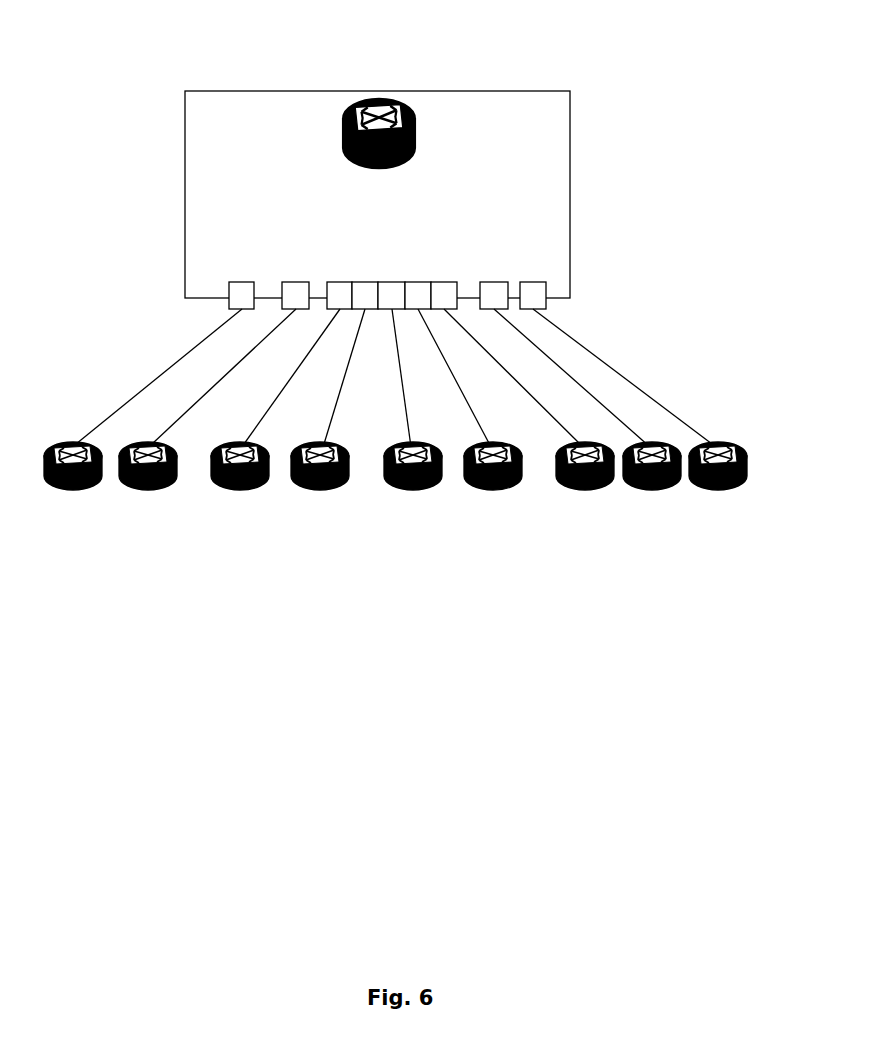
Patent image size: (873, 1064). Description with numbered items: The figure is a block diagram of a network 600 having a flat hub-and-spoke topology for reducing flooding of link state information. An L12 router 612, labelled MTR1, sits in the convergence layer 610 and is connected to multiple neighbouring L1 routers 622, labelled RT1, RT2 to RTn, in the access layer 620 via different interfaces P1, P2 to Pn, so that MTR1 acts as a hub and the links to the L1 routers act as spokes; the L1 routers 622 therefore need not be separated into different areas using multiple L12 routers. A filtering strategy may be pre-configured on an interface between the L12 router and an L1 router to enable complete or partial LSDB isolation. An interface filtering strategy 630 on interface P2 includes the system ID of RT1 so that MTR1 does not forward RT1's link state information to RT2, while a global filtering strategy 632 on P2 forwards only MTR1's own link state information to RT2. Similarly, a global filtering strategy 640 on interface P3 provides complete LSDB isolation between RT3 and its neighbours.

The network 600 is at (125, 67).
The convergence layer 610 is at (745, 308).
The L12 router 612 is at (527, 112).
The access layer 620 is at (745, 314).
The L1 routers 622 is at (57, 448).
The interface filtering strategy 630 is at (264, 249).
The global filtering strategy 632 is at (297, 281).
The global filtering strategy 640 is at (340, 281).